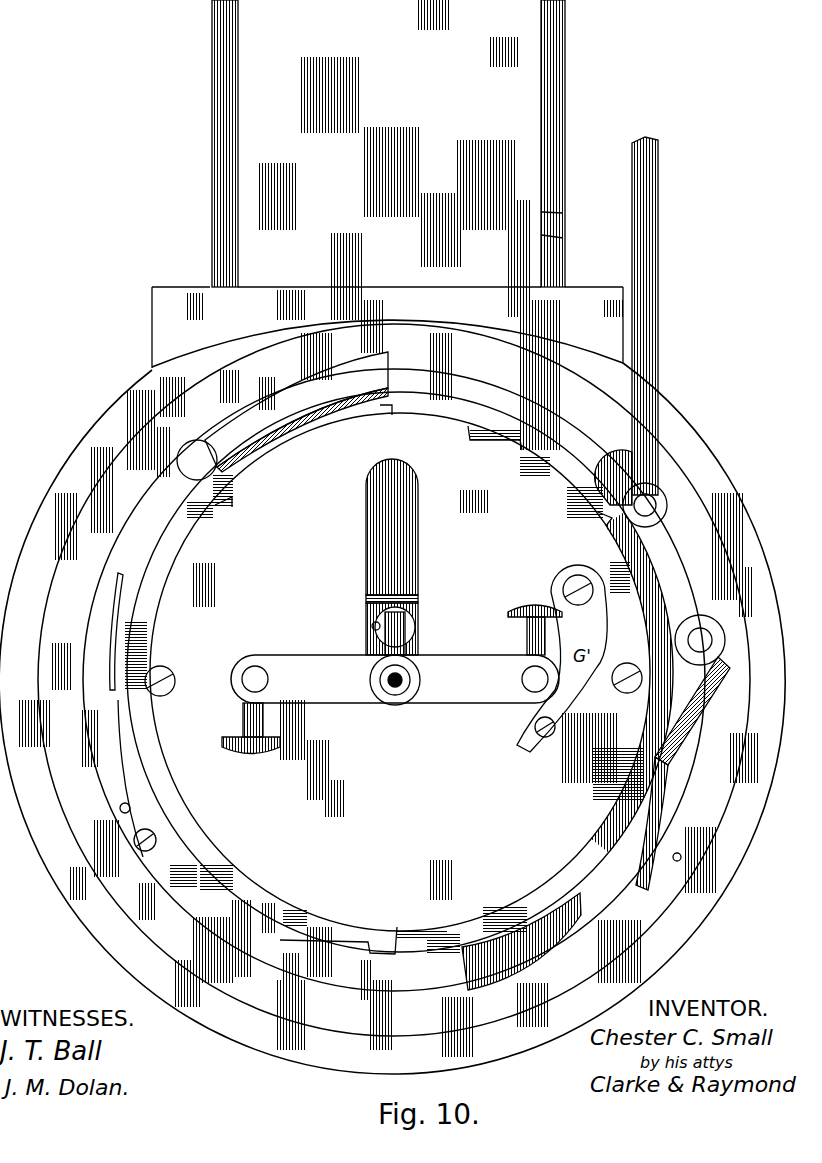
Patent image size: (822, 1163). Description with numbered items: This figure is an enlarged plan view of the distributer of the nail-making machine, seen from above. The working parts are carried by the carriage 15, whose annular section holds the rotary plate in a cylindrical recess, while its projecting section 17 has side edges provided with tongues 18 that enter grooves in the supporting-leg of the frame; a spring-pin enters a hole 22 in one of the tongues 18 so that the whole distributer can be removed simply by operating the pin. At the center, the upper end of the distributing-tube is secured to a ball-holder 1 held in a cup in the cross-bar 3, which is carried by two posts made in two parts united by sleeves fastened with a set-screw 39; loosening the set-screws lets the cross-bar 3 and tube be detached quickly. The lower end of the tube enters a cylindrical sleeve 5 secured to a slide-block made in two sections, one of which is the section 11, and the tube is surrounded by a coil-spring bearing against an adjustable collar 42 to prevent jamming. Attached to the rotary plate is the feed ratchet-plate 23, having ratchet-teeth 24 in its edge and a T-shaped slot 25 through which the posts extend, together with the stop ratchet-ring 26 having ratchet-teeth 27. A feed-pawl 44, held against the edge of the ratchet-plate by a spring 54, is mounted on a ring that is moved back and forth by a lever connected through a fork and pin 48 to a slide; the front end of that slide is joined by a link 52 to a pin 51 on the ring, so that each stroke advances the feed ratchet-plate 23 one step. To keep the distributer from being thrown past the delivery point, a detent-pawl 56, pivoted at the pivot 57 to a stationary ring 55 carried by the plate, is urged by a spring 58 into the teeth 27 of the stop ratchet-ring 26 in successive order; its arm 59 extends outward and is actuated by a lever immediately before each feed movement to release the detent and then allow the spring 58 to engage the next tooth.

The projecting section 17 is at (358, 160).
The tongues 18 is at (574, 123).
The hole 22 is at (563, 222).
The link 52 is at (658, 292).
The carriage 15 is at (394, 695).
The detent-pawl 56 is at (394, 680).
The arm 59 is at (296, 412).
The pivot 57 is at (197, 460).
The ratchet-teeth 27 is at (382, 414).
The stop ratchet-ring 26 is at (470, 432).
The ratchet-teeth 24 is at (540, 498).
The feed ratchet-plate 23 is at (282, 505).
The pin 51 is at (650, 505).
The T-shaped slot 25 is at (418, 572).
The section of slide-block 11 is at (418, 600).
The adjustable collar 42 is at (408, 624).
The cylindrical sleeve 5 is at (372, 624).
The cross-bar 3 is at (395, 679).
The ball-holder 1 is at (411, 683).
The set-screw 39 is at (528, 612).
The feed-pawl 44 is at (700, 658).
The spring 54 is at (678, 766).
The spring 58 is at (116, 652).
The fork and pin 48 is at (115, 778).
The stationary ring 55 is at (430, 941).